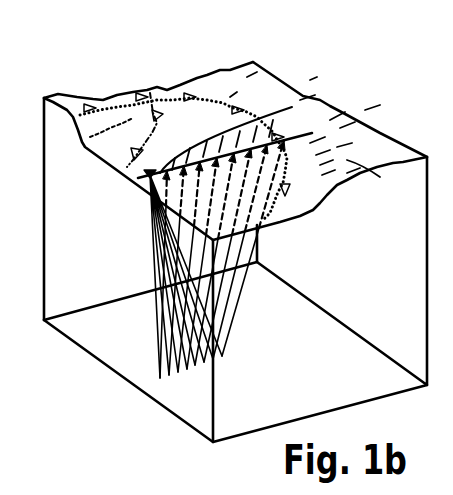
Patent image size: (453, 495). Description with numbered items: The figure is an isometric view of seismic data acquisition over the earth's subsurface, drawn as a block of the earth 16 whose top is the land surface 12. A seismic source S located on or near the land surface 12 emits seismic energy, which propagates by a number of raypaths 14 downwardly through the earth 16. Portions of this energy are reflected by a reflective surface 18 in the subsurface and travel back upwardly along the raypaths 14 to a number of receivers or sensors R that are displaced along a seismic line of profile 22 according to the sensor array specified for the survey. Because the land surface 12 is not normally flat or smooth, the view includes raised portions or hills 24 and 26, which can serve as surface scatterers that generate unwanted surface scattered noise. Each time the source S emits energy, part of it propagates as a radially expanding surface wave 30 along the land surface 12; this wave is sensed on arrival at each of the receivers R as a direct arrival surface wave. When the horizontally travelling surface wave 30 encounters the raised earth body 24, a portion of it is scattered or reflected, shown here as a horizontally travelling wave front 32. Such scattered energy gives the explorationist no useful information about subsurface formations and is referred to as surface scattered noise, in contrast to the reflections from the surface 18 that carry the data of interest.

The land surface 12 is at (283, 108).
The raypaths 14 is at (151, 318).
The earth 16 is at (385, 273).
The reflective surface 18 is at (314, 381).
The seismic line of profile 22 is at (342, 140).
The raised portion or hill 24 is at (77, 100).
The raised portion or hill 26 is at (378, 147).
The surface wave 30 is at (267, 63).
The horizontally travelling wave front 32 is at (150, 93).
The receivers or sensors R is at (292, 107).
The seismic source S is at (140, 177).